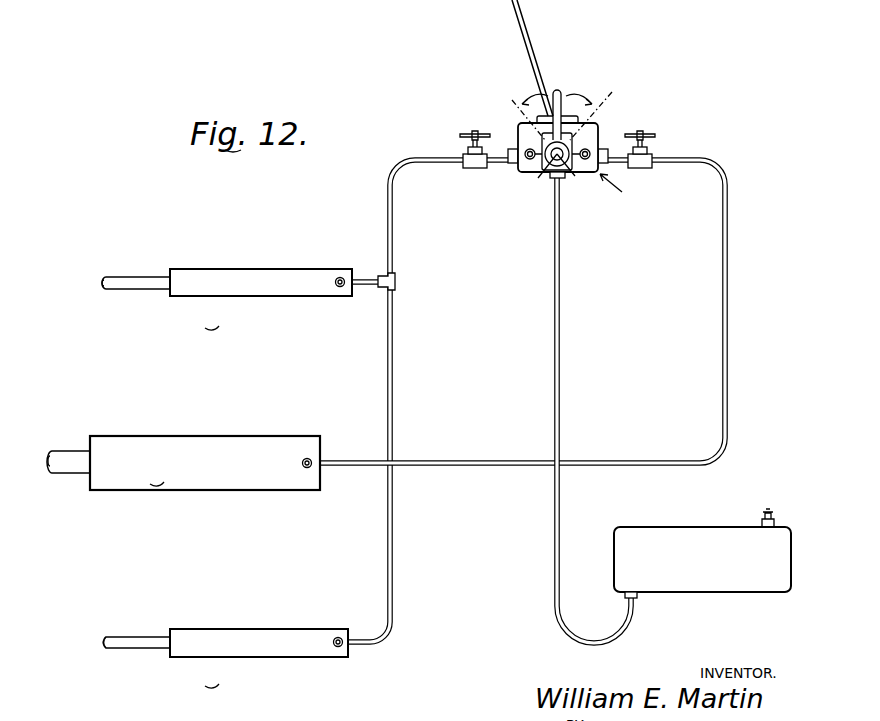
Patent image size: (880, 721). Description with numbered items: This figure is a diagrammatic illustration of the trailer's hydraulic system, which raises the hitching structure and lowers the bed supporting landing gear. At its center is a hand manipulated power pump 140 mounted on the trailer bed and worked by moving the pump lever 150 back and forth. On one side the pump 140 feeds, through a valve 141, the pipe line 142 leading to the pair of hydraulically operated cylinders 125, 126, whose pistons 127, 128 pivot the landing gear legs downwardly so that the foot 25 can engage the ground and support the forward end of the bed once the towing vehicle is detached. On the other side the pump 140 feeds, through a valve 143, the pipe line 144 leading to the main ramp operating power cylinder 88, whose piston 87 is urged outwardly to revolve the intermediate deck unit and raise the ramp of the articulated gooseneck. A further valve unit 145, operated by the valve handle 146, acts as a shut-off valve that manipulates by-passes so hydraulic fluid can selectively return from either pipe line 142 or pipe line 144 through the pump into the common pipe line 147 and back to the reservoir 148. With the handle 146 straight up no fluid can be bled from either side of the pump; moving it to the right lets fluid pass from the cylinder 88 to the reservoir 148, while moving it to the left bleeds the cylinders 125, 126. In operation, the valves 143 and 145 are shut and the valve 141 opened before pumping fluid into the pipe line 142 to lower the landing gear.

The foot 25 is at (357, 10).
The pump lever 150 is at (517, 22).
The valve handle 146 is at (560, 108).
The power pump 140 is at (570, 116).
The valve 141 is at (476, 132).
The valve 143 is at (652, 150).
The valve unit 145 is at (538, 178).
The pipe line 142 is at (394, 222).
The common pipe line 147 is at (561, 283).
The pipe line 144 is at (728, 258).
The hydraulically operated cylinder 125 is at (309, 272).
The piston 127 is at (128, 290).
The hydraulically operated power cylinder 88 is at (278, 450).
The piston 87 is at (70, 474).
The hydraulically operated cylinder 126 is at (316, 632).
The piston 128 is at (130, 649).
The reservoir 148 is at (695, 582).